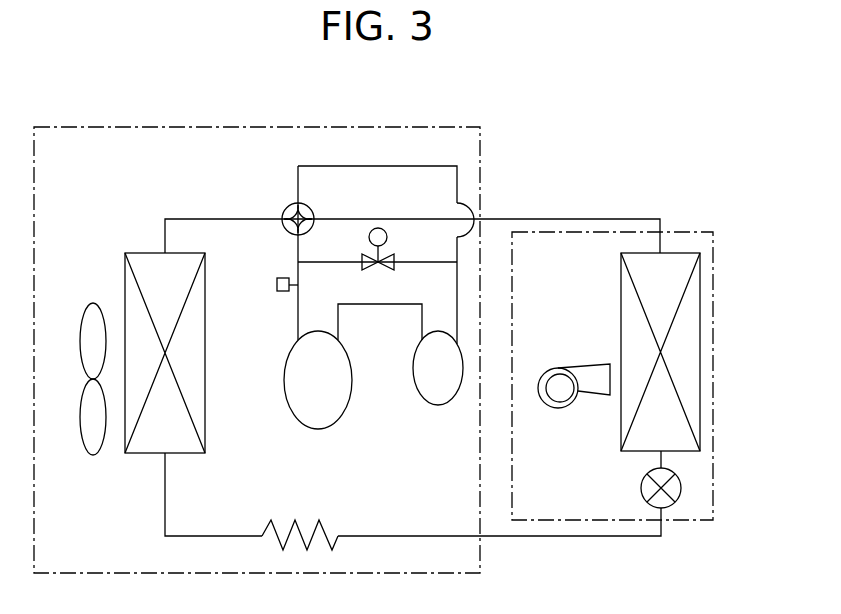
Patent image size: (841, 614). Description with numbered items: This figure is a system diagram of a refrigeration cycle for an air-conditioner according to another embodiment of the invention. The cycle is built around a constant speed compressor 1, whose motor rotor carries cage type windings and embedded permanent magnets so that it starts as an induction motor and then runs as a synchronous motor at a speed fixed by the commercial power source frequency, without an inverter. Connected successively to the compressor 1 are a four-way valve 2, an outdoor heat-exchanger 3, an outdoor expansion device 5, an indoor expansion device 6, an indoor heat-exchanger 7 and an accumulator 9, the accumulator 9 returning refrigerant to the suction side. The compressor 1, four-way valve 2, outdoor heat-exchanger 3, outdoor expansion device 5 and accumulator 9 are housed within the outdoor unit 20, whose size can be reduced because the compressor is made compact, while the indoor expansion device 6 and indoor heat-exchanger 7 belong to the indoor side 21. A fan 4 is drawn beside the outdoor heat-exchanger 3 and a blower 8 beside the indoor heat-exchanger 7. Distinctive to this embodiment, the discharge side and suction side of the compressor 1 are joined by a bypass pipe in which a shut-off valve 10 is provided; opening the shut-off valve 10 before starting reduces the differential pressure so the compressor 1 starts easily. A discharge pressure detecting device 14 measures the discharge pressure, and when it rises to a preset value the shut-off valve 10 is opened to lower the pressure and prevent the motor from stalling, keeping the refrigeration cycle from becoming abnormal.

The constant speed compressor 1 is at (300, 423).
The four-way valve 2 is at (285, 207).
The outdoor heat-exchanger 3 is at (206, 313).
The outdoor fan 4 is at (92, 303).
The outdoor expansion device 5 is at (325, 531).
The indoor expansion device 6 is at (642, 492).
The indoor heat-exchanger 7 is at (619, 309).
The indoor blower 8 is at (586, 366).
The accumulator 9 is at (422, 400).
The shut-off valve 10 is at (384, 229).
The discharge pressure detecting device 14 is at (281, 292).
The outdoor unit 20 is at (352, 127).
The indoor unit 21 is at (683, 233).